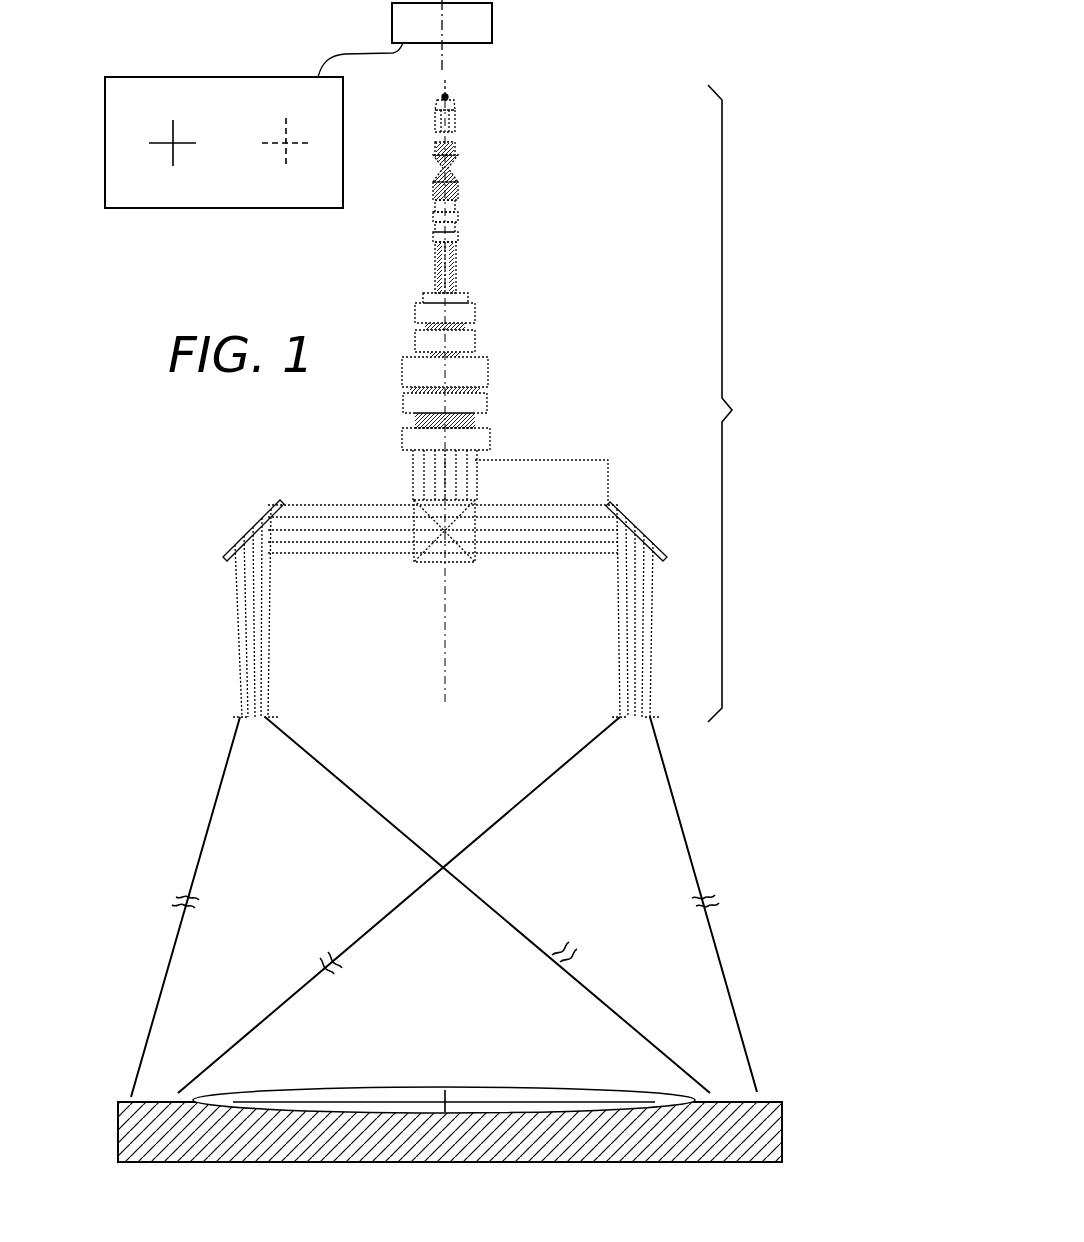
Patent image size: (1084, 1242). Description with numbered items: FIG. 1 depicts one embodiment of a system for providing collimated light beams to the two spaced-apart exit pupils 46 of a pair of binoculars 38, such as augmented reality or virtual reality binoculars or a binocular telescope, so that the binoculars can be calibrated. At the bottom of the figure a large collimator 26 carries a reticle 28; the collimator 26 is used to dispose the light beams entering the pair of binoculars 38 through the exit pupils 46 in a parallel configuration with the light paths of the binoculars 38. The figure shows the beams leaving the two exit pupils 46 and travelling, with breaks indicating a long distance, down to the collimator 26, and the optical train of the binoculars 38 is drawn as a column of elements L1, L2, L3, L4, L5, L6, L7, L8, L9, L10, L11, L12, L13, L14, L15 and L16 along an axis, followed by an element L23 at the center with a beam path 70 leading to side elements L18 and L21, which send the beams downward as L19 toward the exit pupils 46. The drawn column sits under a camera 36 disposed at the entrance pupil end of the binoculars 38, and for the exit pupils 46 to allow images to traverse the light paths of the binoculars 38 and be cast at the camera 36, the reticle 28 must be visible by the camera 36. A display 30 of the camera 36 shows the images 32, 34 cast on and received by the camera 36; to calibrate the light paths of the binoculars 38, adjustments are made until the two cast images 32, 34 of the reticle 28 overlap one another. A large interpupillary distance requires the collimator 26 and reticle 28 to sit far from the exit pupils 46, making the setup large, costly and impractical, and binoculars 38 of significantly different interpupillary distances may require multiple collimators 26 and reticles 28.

The collimator 26 is at (769, 1101).
The reticle 28 is at (522, 1102).
The display 30 is at (185, 77).
The cast image 32 is at (163, 141).
The cast image 34 is at (297, 141).
The camera 36 is at (492, 25).
The pair of binoculars 38 is at (778, 424).
The exit pupils 46 is at (235, 721).
The beam path 70 is at (541, 470).
The light source L1 is at (450, 95).
The lens element L2 is at (454, 103).
The lens element L3 is at (456, 120).
The lens element L4 is at (456, 132).
The lens element L5 is at (458, 143).
The lens element L6 is at (458, 157).
The lens element L7 is at (458, 170).
The lens element L8 is at (458, 185).
The lens element L9 is at (458, 200).
The lens element L10 is at (458, 215).
The lens element L11 is at (466, 297).
The lens element L12 is at (470, 310).
The lens element L13 is at (470, 335).
The lens element L14 is at (480, 368).
The lens element L15 is at (478, 405).
The lens element L16 is at (482, 436).
The right mirror L18 is at (670, 543).
The right beam L19 is at (655, 716).
The left mirror L21 is at (265, 518).
The beam splitter L23 is at (478, 500).